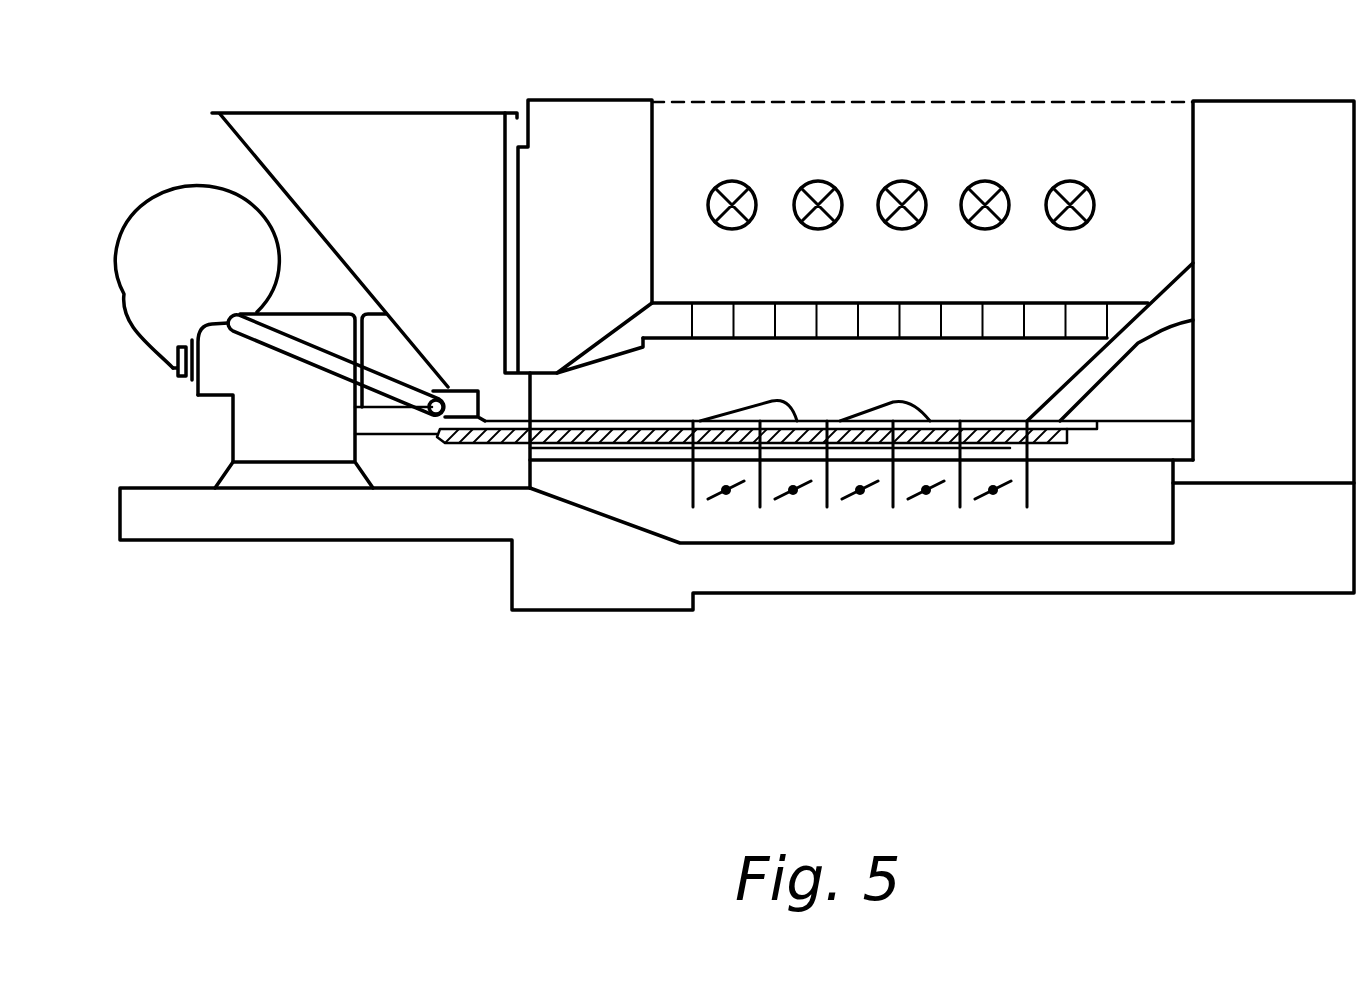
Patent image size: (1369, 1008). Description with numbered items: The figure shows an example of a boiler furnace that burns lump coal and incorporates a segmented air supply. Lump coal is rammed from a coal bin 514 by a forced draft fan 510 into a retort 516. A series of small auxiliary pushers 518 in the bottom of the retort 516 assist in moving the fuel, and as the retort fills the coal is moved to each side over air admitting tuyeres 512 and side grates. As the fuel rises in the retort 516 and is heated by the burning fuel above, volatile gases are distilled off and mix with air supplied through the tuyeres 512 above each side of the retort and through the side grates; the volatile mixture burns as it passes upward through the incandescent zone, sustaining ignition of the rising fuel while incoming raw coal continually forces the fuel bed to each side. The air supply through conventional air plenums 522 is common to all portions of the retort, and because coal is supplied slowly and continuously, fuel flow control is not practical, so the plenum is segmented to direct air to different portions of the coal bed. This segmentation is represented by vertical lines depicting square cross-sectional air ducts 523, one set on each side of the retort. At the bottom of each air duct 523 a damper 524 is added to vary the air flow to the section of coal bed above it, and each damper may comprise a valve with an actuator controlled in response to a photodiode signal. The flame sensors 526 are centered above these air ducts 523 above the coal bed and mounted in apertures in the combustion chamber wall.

The forced draft fan 510 is at (146, 304).
The air admitting tuyeres 512 is at (950, 303).
The coal bin 514 is at (350, 122).
The retort 516 is at (735, 355).
The auxiliary pushers 518 is at (913, 408).
The air plenums 522 is at (957, 532).
The air ducts 523 is at (1031, 480).
The damper 524 is at (700, 497).
The flame sensors 526 is at (816, 190).